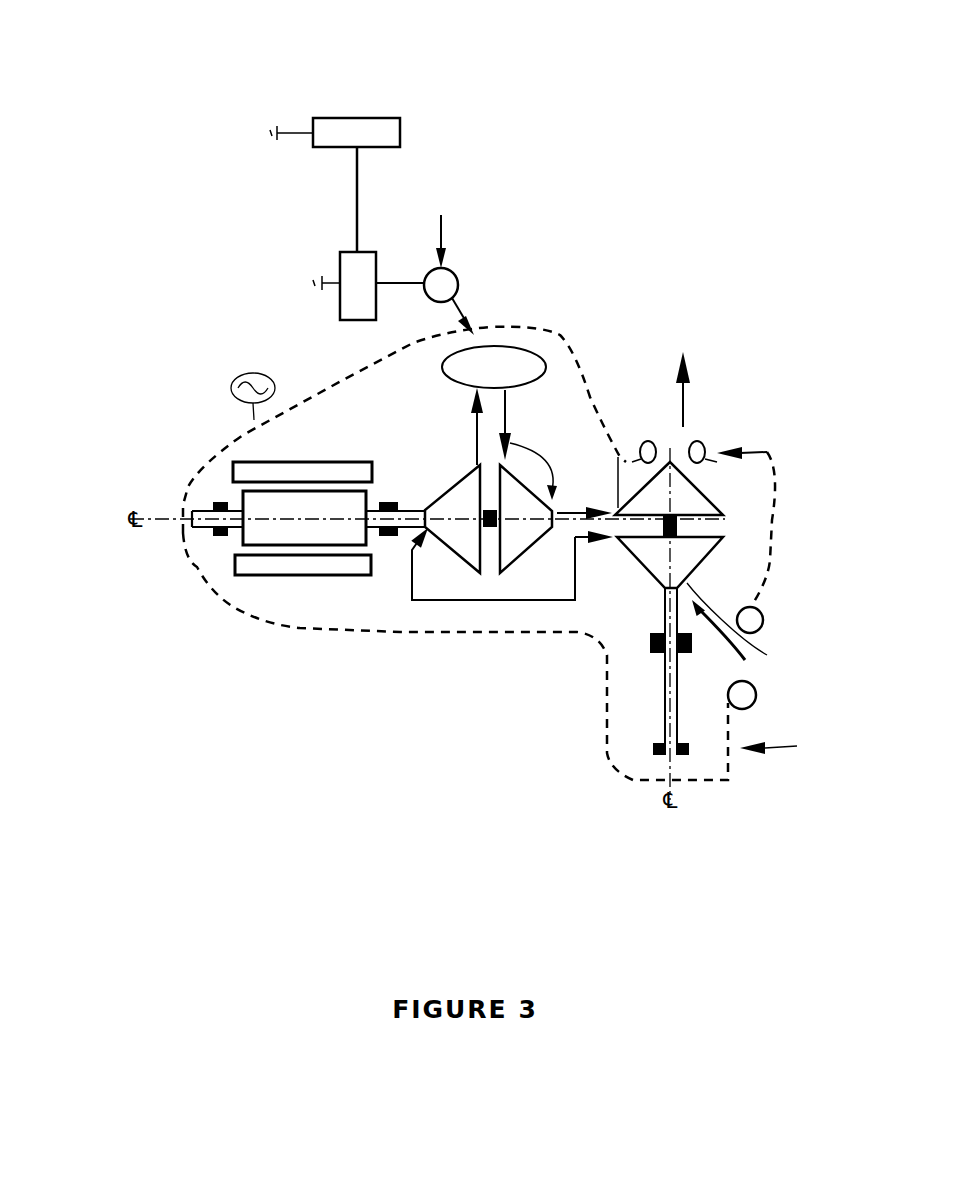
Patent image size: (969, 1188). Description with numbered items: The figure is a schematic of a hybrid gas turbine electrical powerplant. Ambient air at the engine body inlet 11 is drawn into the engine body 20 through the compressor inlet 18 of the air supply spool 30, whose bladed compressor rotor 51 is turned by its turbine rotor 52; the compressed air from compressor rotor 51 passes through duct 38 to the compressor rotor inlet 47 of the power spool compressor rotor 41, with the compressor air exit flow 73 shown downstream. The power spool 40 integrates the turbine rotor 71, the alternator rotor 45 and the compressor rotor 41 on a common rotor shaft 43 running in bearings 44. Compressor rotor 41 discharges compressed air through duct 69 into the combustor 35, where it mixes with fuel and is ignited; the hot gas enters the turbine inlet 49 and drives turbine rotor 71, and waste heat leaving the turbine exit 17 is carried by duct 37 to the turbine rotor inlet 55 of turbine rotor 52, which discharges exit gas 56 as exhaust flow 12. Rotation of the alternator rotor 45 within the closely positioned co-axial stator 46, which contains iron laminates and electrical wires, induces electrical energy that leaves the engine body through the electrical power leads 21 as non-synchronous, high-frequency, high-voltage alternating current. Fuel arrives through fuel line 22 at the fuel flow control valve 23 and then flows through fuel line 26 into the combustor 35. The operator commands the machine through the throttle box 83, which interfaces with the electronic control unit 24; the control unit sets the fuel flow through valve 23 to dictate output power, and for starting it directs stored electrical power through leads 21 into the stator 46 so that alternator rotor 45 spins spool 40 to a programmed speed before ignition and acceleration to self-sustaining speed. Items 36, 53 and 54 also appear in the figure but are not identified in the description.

The throttle box 83 is at (368, 128).
The fuel line 22 is at (448, 226).
The fuel line 26 is at (463, 297).
The electronic control unit 24 is at (347, 262).
The fuel flow control valve 23 is at (432, 277).
The combustor 35 is at (513, 352).
The duct 69 is at (473, 425).
The combustor return duct 36 is at (522, 482).
The engine body 20 is at (330, 379).
The electrical power leads 21 is at (243, 458).
The N2 power spool 40 is at (267, 544).
The rotor shaft 43 is at (200, 522).
The bearings 44 is at (225, 534).
The alternator rotor 45 is at (270, 533).
The alternator stator 46 is at (275, 565).
The compressor rotor inlet 47 is at (433, 533).
The compressor rotor 41 is at (462, 540).
The duct 38 is at (513, 590).
The turbine inlet 49 is at (568, 490).
The air exit flow 73 is at (608, 541).
The waste heat duct 37 is at (573, 530).
The turbine rotor 71 is at (521, 553).
The turbine exit 17 is at (618, 505).
The exhaust flow 12 is at (672, 460).
The compressor rotor 51 is at (652, 553).
The turbine shaft 53 is at (680, 730).
The turbine bearings 54 is at (655, 657).
The turbine rotor 52 is at (683, 340).
The turbine rotor inlet 55 is at (662, 447).
The exit gas 56 is at (690, 455).
The N1 spool 30 is at (797, 746).
The compressor inlet 18 is at (767, 655).
The engine body inlet 11 is at (758, 662).